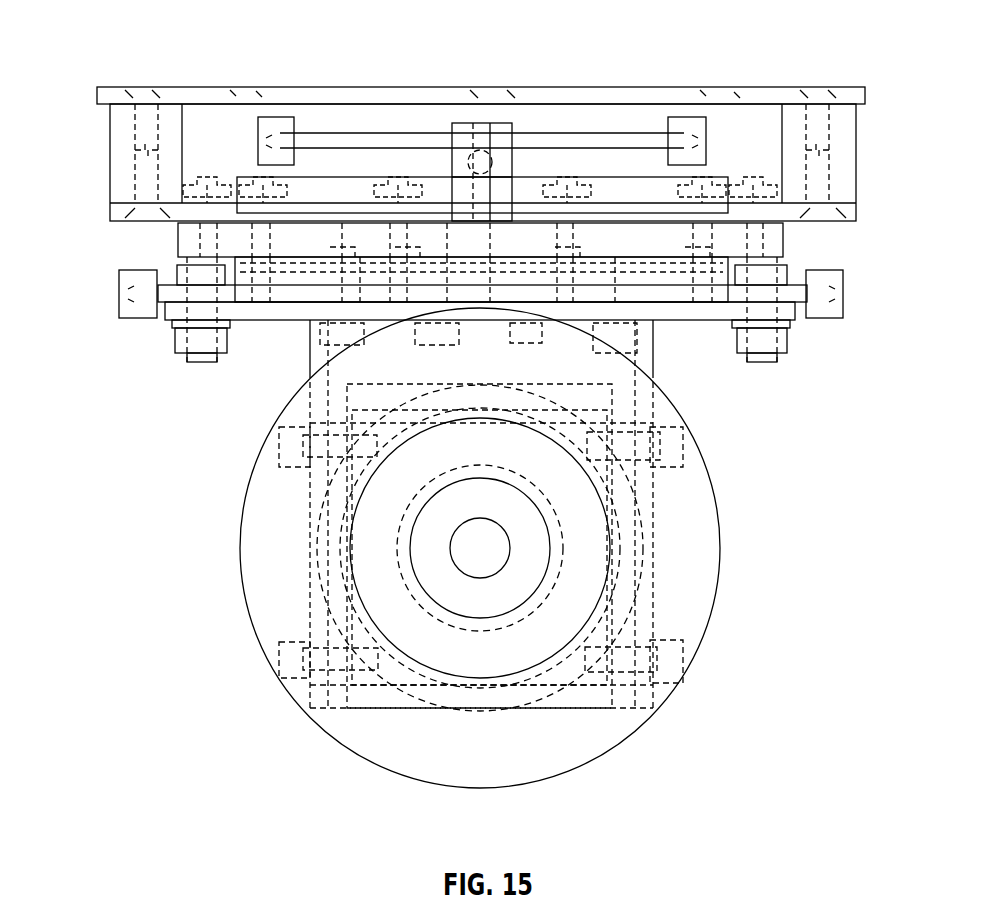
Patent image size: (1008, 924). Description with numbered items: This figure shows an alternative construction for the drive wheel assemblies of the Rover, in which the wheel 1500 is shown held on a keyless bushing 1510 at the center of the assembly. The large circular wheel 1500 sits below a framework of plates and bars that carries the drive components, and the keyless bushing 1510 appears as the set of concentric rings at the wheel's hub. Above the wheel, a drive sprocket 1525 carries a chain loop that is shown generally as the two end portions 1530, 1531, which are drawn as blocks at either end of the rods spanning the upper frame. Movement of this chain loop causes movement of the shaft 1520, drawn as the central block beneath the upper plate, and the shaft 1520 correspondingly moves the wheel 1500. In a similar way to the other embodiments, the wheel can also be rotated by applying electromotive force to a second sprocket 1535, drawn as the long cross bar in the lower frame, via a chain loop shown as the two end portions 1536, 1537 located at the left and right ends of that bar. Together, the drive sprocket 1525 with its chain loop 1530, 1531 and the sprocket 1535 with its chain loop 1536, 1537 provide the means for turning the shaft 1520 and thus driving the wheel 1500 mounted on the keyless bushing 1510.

The wheel 1500 is at (265, 620).
The keyless bushing 1510 is at (553, 543).
The shaft 1520 is at (468, 123).
The drive sprocket 1525 is at (585, 135).
The chain loop 1530 is at (282, 117).
The chain loop 1531 is at (688, 117).
The sprocket 1535 is at (170, 283).
The chain loop 1536 is at (140, 320).
The chain loop 1537 is at (825, 270).